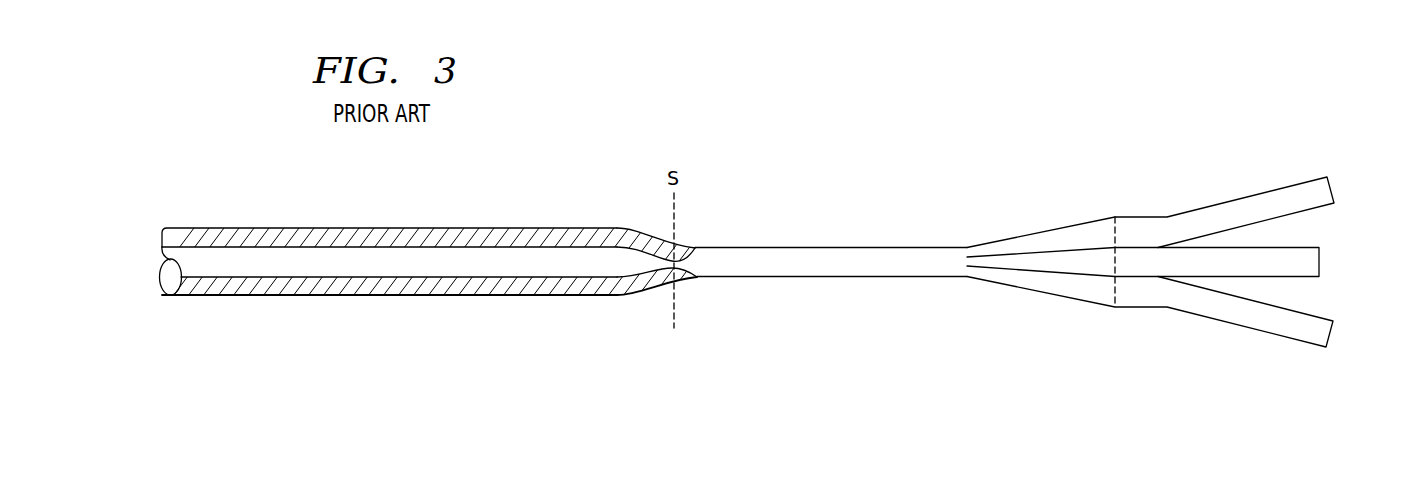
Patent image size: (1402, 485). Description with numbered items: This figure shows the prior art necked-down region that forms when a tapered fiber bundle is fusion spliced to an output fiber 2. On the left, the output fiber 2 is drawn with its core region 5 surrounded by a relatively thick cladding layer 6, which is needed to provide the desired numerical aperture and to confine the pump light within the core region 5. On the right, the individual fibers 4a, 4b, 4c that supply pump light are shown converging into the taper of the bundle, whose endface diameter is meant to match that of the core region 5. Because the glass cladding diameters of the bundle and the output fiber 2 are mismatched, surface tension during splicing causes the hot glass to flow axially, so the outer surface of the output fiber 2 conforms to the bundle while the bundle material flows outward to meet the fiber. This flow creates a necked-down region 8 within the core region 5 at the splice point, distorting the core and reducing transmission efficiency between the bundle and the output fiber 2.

The output fiber 2 is at (366, 315).
The fiber 4a is at (1265, 198).
The fiber 4b is at (1322, 265).
The fiber 4c is at (1293, 330).
The core region 5 is at (505, 267).
The cladding layer 6 is at (345, 235).
The necked-down region 8 is at (693, 248).